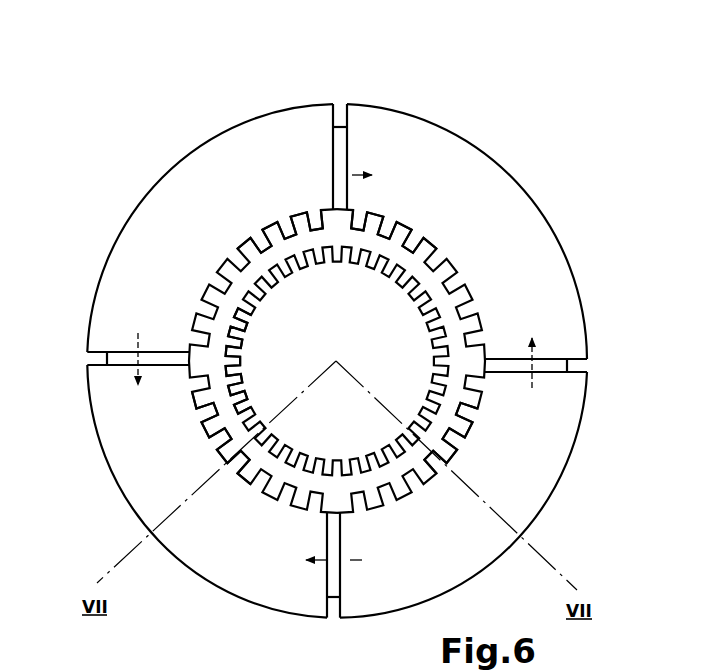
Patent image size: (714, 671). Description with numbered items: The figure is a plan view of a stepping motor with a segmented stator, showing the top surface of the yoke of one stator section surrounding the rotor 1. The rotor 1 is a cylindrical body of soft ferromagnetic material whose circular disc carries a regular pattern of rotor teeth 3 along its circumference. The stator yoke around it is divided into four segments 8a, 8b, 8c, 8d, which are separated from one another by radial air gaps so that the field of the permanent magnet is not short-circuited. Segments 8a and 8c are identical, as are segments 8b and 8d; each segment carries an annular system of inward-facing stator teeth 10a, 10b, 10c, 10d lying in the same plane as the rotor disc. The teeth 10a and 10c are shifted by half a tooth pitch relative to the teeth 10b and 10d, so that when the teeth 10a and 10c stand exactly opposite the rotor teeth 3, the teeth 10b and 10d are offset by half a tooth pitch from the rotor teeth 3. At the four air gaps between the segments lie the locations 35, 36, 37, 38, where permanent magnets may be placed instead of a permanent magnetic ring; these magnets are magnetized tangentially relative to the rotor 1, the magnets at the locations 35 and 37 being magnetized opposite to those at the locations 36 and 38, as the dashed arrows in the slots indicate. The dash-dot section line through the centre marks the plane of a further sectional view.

The rotor 1 is at (340, 333).
The rotor teeth 3 is at (238, 363).
The stator segment a 8a is at (246, 559).
The stator segment b 8b is at (424, 560).
The stator segment c 8c is at (512, 257).
The stator segment d 8d is at (184, 252).
The stator teeth of segment a 10a is at (194, 390).
The stator teeth of segment b 10b is at (464, 432).
The stator teeth of segment c 10c is at (436, 258).
The stator teeth of segment d 10d is at (258, 241).
The permanent magnet location 35 is at (578, 365).
The permanent magnet location 36 is at (340, 103).
The permanent magnet location 37 is at (100, 358).
The permanent magnet location 38 is at (333, 612).